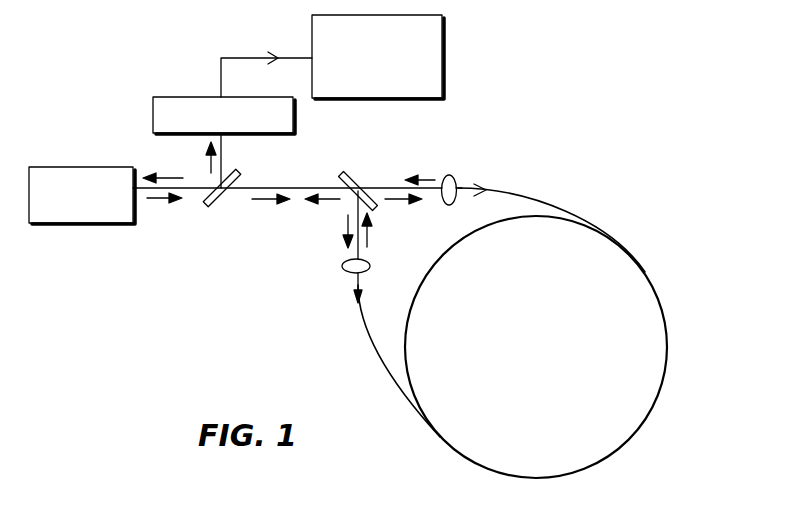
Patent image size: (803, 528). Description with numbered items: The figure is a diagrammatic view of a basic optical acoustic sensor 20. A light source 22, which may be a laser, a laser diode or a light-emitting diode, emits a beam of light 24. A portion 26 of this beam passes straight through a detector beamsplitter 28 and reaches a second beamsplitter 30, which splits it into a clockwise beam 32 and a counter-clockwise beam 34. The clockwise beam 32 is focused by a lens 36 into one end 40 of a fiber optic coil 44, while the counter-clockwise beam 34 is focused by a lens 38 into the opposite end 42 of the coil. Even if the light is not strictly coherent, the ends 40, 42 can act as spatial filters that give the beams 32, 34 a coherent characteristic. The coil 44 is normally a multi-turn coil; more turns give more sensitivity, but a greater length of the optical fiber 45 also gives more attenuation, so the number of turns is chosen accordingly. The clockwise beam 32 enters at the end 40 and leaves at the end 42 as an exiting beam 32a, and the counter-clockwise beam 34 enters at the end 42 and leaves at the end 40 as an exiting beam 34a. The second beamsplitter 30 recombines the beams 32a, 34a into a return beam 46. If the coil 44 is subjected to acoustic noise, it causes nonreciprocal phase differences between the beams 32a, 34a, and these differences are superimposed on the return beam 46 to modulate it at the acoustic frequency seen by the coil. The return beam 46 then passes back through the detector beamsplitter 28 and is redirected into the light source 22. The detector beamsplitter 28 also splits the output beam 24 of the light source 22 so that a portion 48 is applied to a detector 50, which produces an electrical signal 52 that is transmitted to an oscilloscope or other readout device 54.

The acoustic sensor 20 is at (592, 172).
The light source 22 is at (92, 224).
The beam of light 24 is at (155, 200).
The portion of beam 26 is at (257, 200).
The detector beamsplitter 28 is at (218, 206).
The second beamsplitter 30 is at (346, 176).
The clockwise beam 32 is at (393, 200).
The exiting clockwise beam 32a is at (368, 240).
The counter-clockwise beam 34 is at (347, 240).
The exiting counter-clockwise beam 34a is at (430, 179).
The lens 36 is at (454, 177).
The lens 38 is at (366, 270).
The coil end 40 is at (466, 190).
The coil end 42 is at (357, 295).
The fiber optic coil 44 is at (632, 258).
The optical fiber 45 is at (384, 368).
The return beam 46 is at (172, 178).
The beam portion 48 is at (208, 160).
The detector 50 is at (190, 97).
The electrical signal 52 is at (240, 58).
The readout device 54 is at (442, 48).